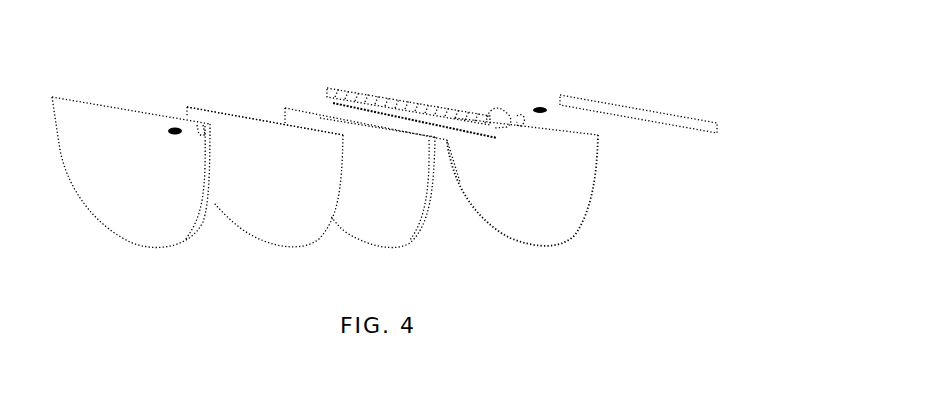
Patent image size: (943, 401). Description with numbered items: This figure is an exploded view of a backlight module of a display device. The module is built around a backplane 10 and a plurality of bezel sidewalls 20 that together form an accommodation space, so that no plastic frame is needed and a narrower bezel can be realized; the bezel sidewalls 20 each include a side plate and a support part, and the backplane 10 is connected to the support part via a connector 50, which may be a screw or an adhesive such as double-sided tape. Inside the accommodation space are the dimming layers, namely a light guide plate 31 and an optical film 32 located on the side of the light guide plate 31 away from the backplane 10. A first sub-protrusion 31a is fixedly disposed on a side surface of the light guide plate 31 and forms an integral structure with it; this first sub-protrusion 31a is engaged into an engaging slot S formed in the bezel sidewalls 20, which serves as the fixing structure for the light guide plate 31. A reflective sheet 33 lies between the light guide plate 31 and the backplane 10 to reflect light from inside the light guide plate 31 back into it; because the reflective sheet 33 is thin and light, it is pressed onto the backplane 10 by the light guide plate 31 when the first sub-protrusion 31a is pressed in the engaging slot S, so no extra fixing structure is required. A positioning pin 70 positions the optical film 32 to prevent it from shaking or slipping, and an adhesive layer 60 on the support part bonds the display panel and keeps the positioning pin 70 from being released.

The backplane 10 is at (116, 115).
The connector 50 is at (172, 122).
The reflective sheet 33 is at (232, 122).
The light guide plate 31 is at (305, 117).
The first sub-protrusion 31a is at (408, 126).
The bezel sidewall 20 is at (409, 96).
The optical film 32 is at (525, 128).
The positioning pin 70 is at (541, 105).
The adhesive layer 60 is at (623, 108).
The engaging slot S is at (460, 130).